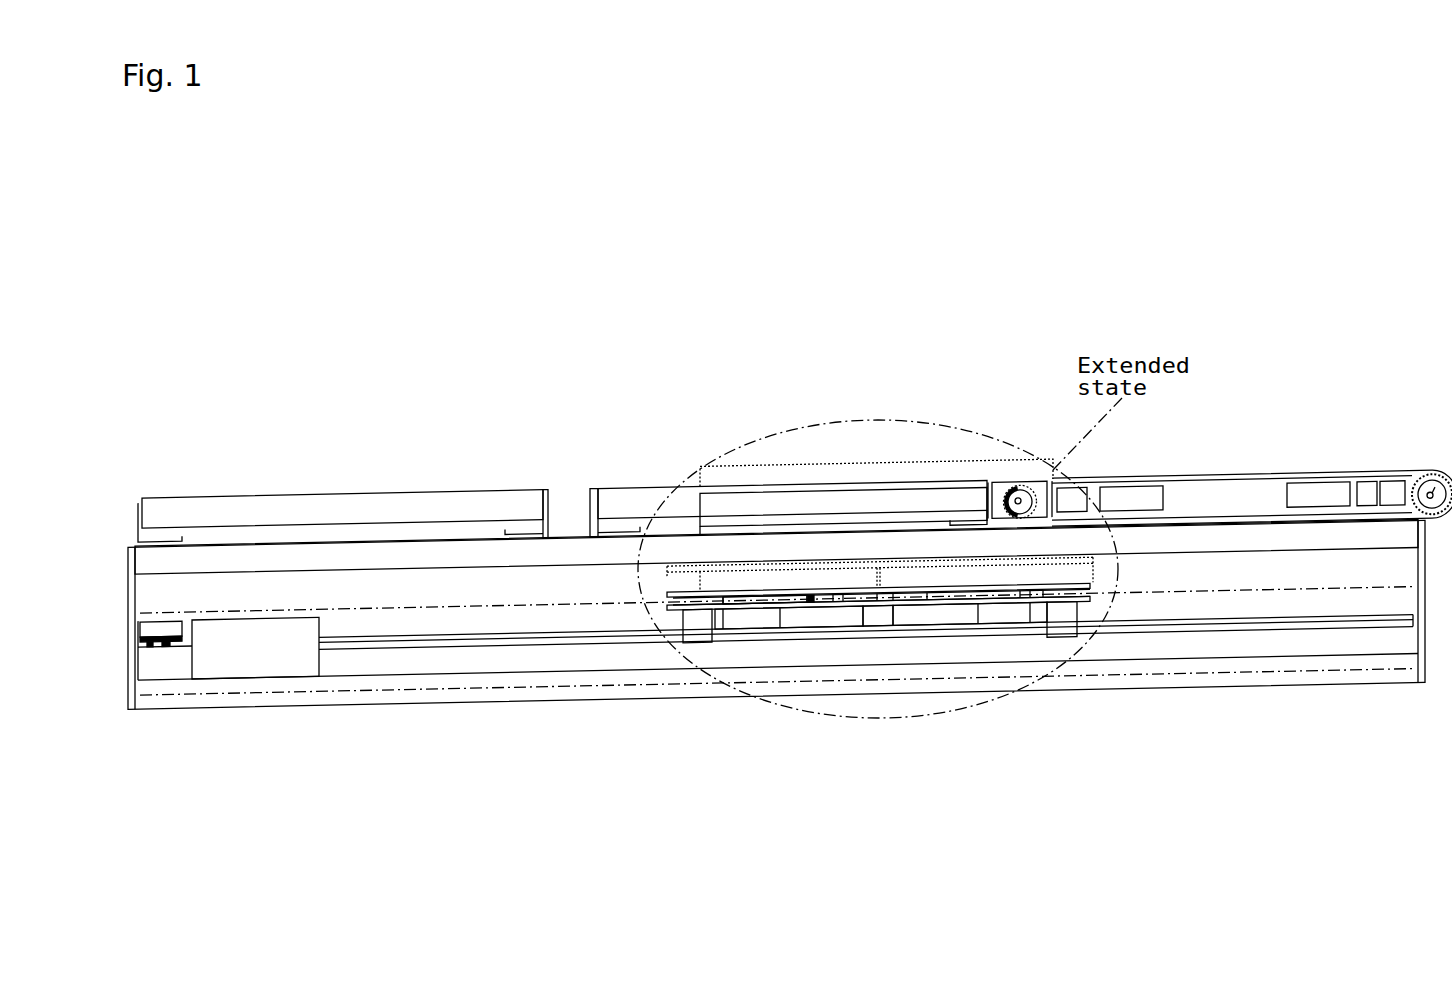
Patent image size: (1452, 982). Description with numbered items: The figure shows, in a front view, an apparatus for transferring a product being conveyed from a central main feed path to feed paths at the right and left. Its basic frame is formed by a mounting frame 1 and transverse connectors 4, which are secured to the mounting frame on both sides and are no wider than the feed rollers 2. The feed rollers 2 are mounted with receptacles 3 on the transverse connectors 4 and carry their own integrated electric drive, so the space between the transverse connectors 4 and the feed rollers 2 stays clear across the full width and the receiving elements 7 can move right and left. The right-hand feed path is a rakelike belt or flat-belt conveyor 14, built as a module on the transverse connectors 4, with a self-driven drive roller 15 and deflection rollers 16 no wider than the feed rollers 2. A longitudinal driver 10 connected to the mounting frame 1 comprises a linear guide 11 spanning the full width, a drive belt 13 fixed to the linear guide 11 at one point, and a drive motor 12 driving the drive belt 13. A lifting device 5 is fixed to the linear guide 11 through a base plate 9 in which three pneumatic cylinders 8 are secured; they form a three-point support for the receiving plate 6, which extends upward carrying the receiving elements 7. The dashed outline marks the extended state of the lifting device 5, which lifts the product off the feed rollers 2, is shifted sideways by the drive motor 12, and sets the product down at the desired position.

The mounting frame 1 is at (597, 697).
The feed rollers 2 is at (620, 503).
The receptacles 3 is at (593, 528).
The transverse connectors 4 is at (332, 557).
The lifting device 5 is at (862, 418).
The receiving plate 6 is at (810, 590).
The receiving elements 7 is at (835, 492).
The pneumatic cylinders 8 is at (693, 618).
The base plate 9 is at (793, 602).
The longitudinal driver 10 is at (270, 692).
The linear guide 11 is at (1007, 613).
The drive motor 12 is at (283, 648).
The drive belt 13 is at (1232, 625).
The rakelike belt or flat-belt conveyor 14 is at (1225, 497).
The drive roller 15 is at (1435, 488).
The deflection rollers 16 is at (1032, 505).